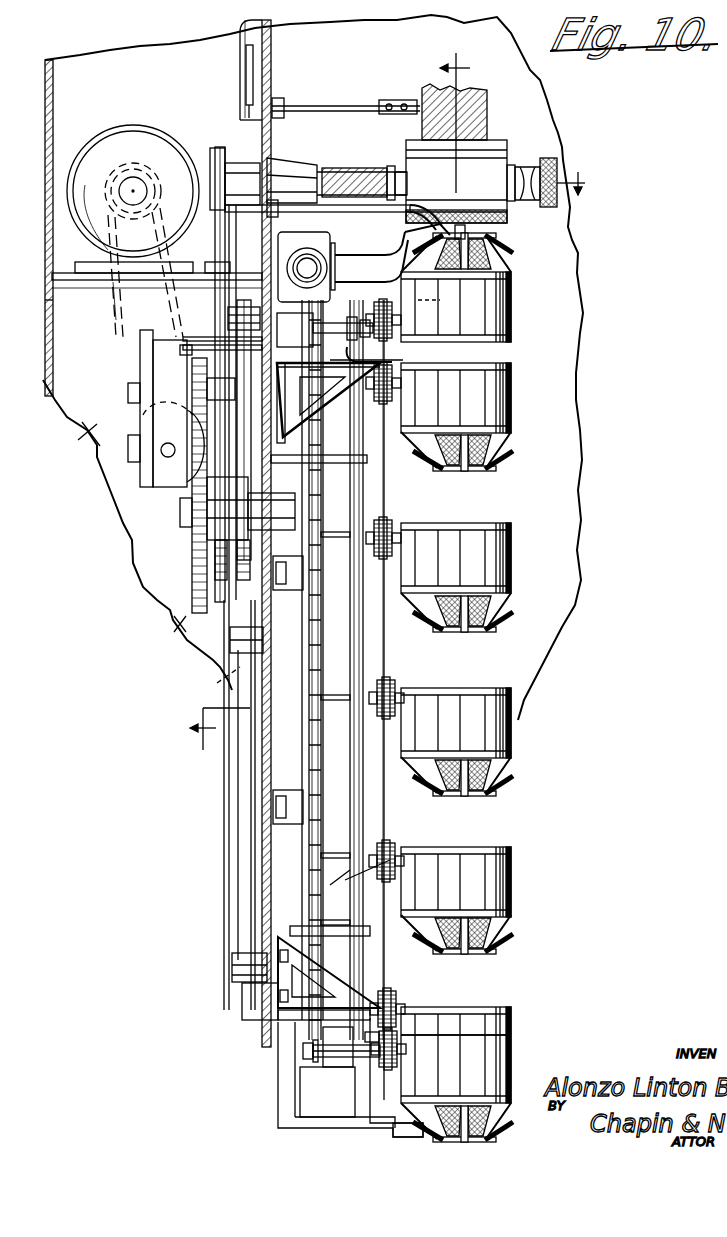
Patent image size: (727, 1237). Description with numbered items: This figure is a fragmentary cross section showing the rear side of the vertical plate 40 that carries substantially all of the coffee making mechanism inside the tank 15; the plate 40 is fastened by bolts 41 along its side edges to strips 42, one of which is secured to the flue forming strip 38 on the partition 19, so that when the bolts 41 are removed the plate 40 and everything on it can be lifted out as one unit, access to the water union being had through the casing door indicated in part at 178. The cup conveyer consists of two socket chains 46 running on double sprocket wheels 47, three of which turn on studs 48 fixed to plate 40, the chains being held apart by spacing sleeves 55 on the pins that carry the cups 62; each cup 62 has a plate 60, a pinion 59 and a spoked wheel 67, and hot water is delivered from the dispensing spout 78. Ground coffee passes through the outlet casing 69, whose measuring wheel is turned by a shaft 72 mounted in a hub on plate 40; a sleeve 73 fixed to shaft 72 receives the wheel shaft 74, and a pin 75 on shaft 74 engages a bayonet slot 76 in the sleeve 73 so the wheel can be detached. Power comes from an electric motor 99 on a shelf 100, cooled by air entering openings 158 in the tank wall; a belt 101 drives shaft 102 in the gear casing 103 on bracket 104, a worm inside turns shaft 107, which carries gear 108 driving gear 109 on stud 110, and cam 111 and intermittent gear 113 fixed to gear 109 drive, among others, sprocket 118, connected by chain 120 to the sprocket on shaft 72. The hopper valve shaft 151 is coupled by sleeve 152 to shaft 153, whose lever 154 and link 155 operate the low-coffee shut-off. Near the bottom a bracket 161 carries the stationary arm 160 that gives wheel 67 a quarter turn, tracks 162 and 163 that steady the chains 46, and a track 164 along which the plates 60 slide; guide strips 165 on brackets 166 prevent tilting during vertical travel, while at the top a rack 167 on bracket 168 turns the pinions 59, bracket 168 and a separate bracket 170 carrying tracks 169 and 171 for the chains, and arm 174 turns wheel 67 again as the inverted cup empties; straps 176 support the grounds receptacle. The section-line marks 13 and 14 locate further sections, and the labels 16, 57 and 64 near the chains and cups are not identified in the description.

The section line 13- 13 is at (324, 403).
The view direction arrow 14 is at (605, 183).
The tank 15 is at (45, 140).
The chain 16 is at (362, 812).
The partition 19 is at (72, 442).
The flue forming strip 38 is at (180, 626).
The vertical plate 40 is at (262, 855).
The bolts 41 is at (215, 682).
The strips 42 is at (232, 1000).
The socket chains 46 is at (305, 1055).
The double sprocket wheels 47 is at (388, 410).
The studs 48 is at (380, 992).
The spacing sleeve 55 is at (262, 1122).
The container 57 is at (456, 687).
The pinion 59 is at (424, 1082).
The plate 60 is at (387, 684).
The coffee cup 62 is at (480, 430).
The funnel 64 is at (513, 270).
The spoked wheel 67 is at (500, 246).
The outlet pipe 69 is at (487, 116).
The shaft 72 is at (210, 172).
The sleeve 73 is at (336, 166).
The shaft 74 is at (557, 160).
The pin 75 is at (350, 168).
The bayonet slot 76 is at (384, 172).
The dispensing spout 78 is at (438, 299).
The electric motor 99 is at (100, 140).
The shelf 100 is at (72, 282).
The belt 101 is at (120, 308).
The shaft 102 is at (165, 456).
The gear casing 103 is at (160, 340).
The bracket 104 is at (203, 330).
The shaft 107 is at (214, 392).
The gear 108 is at (192, 396).
The gear 109 is at (174, 622).
The stud 110 is at (180, 514).
The cam 111 is at (210, 542).
The intermittent gear 113 is at (230, 645).
The sprocket 118 is at (212, 572).
The chain 120 is at (215, 243).
The shaft 151 is at (422, 100).
The sleeve 152 is at (385, 100).
The shaft 153 is at (326, 106).
The lever 154 is at (254, 68).
The link 155 is at (266, 32).
The openings 158 is at (133, 231).
The stationary arm 160 is at (398, 1138).
The bracket 161 is at (285, 1080).
The track 162 is at (312, 1044).
The track 163 is at (360, 1062).
The track 164 is at (456, 1025).
The guide strips 165 is at (385, 514).
The brackets 166 is at (380, 486).
The rack 167 is at (400, 352).
The bracket 168 is at (338, 372).
The track 169 is at (398, 382).
The bracket 170 is at (282, 236).
The track 171 is at (310, 298).
The arm 174 is at (333, 220).
The straps 176 is at (298, 590).
The door 178 is at (53, 356).